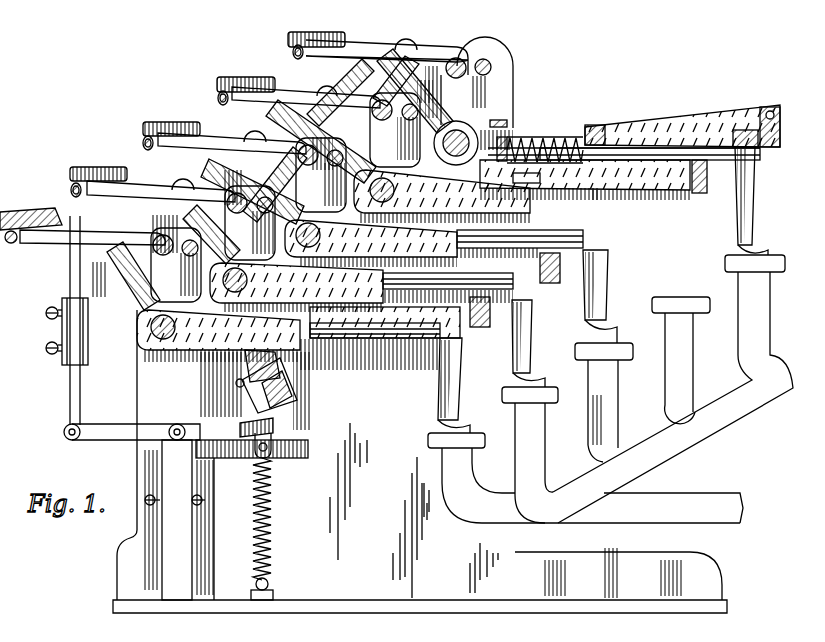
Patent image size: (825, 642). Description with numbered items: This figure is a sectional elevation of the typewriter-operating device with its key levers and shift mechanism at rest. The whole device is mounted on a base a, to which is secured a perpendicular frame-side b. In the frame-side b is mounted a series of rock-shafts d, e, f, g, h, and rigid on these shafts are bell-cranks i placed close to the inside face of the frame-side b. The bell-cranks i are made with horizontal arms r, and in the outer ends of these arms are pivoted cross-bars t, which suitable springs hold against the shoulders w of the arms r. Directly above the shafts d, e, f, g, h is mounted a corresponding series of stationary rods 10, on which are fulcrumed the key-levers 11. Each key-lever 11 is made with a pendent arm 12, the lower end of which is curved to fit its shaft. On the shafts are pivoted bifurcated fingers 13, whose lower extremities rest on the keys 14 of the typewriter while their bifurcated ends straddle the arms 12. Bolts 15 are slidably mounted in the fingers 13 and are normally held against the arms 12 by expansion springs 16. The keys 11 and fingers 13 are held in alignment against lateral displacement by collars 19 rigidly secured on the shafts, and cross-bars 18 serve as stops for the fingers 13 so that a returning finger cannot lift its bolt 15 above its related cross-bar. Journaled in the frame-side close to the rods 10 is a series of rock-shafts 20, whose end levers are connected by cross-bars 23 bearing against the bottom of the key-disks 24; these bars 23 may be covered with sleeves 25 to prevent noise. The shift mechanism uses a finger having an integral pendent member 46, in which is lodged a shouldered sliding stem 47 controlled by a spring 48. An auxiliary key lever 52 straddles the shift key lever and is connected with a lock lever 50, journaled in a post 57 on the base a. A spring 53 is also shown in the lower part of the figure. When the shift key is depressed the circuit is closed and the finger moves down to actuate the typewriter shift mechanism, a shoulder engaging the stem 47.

The stationary rods 10 is at (385, 62).
The key-levers 11 is at (440, 45).
The pendent arms 12 is at (470, 104).
The bifurcated fingers 13 is at (606, 130).
The keys of the typewriter 14 is at (693, 346).
The bolts 15 is at (545, 135).
The expansion springs 16 is at (530, 140).
The cross-bars 18 is at (520, 134).
The collars 19 is at (512, 130).
The rock-shafts 20 is at (492, 66).
The cross-bars 23 is at (295, 47).
The key-disks 24 is at (308, 34).
The sleeves 25 is at (295, 57).
The pendent member 46 is at (300, 397).
The shouldered sliding stem 47 is at (241, 424).
The spring 48 is at (250, 365).
The lock lever 50 is at (108, 440).
The auxiliary key lever 52 is at (38, 208).
The spring 53 is at (272, 485).
The post 57 is at (168, 555).
The base a is at (320, 604).
The frame-side b is at (419, 455).
The rock-shaft d is at (150, 330).
The rock-shaft e is at (222, 282).
The rock-shaft f is at (322, 220).
The rock-shaft g is at (368, 190).
The rock-shaft h is at (352, 75).
The bell-cranks i is at (432, 40).
The horizontal arms r is at (698, 122).
The cross-bars t is at (543, 290).
The shoulder w is at (659, 242).